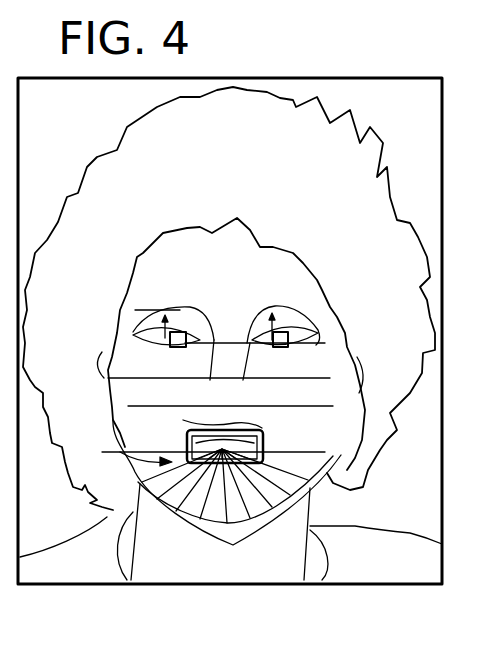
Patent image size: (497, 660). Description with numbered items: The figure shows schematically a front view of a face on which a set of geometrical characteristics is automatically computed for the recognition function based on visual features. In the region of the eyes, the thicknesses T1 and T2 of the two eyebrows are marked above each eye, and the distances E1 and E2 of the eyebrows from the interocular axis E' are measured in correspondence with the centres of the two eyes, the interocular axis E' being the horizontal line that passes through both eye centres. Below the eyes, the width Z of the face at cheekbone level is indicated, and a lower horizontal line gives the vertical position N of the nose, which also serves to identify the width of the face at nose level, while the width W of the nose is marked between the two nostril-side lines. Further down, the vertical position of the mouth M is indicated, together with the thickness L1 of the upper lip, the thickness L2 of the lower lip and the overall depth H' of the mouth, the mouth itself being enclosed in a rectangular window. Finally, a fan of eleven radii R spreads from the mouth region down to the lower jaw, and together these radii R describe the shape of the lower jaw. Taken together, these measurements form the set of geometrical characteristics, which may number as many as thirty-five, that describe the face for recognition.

The thickness of eyebrow T1 is at (173, 310).
The thickness of eyebrow T2 is at (282, 313).
The distance of eyebrow from interocular axis E1 is at (164, 351).
The distance of eyebrow from interocular axis E2 is at (285, 351).
The interocular axis E' is at (255, 357).
The width of the nose W is at (224, 372).
The width of the face at cheekbone level Z is at (330, 378).
The vertical position of the nose N is at (333, 407).
The thickness of the upper lip L1 is at (210, 424).
The thickness of the lower lip L2 is at (266, 458).
The overall depth of the mouth H' is at (226, 441).
The vertical position of the mouth M is at (129, 453).
The radii describing the lower jaw R is at (235, 512).